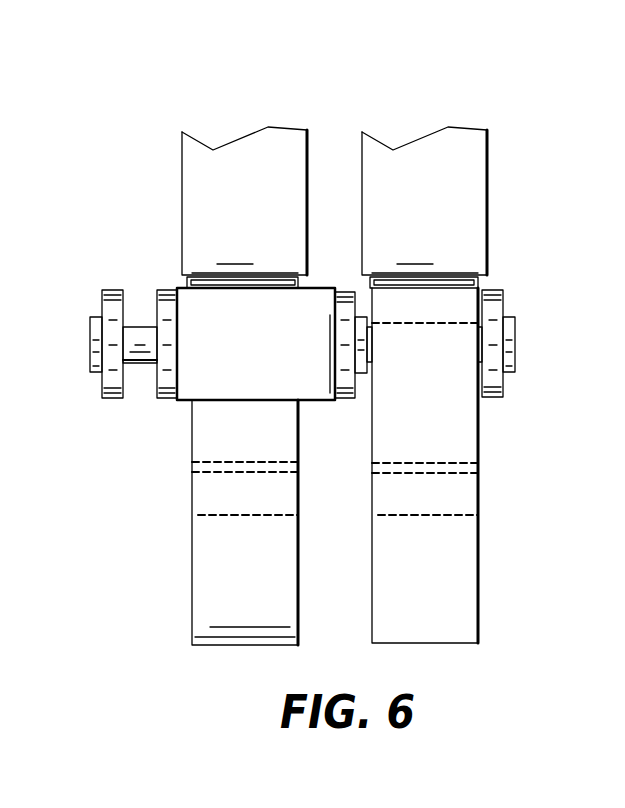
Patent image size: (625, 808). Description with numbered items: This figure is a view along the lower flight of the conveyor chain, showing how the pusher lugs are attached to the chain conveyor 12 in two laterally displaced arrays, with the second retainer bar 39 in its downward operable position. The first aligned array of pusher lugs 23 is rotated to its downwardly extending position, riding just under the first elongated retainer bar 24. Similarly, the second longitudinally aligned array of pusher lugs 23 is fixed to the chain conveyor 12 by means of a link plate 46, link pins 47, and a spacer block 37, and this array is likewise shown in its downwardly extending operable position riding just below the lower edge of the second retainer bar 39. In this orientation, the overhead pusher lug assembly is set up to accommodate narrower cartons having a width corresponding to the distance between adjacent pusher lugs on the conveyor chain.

The chain conveyor 12 is at (136, 421).
The pusher lugs 23 is at (282, 566).
The first elongated retainer bar 24 is at (292, 172).
The spacer block 37 is at (208, 385).
The second retainer bar 39 is at (473, 172).
The link plate 46 is at (493, 290).
The link pins 47 is at (97, 318).